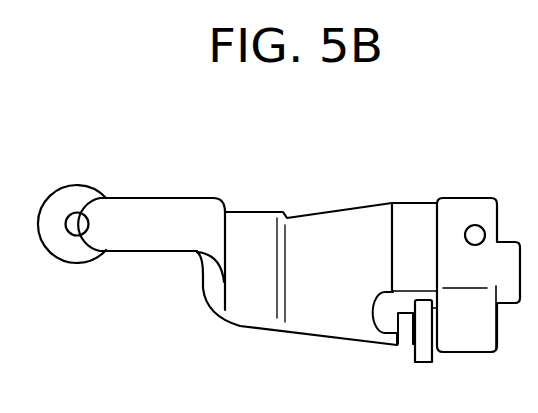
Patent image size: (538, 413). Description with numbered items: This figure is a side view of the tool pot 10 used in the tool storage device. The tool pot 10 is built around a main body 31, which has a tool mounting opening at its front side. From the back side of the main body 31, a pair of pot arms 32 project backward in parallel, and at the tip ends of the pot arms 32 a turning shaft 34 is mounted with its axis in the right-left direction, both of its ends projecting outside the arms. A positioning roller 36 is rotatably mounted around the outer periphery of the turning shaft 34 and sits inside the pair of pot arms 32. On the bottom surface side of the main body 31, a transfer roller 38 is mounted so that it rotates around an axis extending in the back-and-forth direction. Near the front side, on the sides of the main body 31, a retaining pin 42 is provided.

The tool pot 10 is at (308, 157).
The main body 31 is at (357, 227).
The pot arms 32 is at (177, 213).
The turning shaft 34 is at (78, 222).
The positioning roller 36 is at (51, 203).
The transfer roller 38 is at (425, 350).
The retaining pin 42 is at (475, 233).